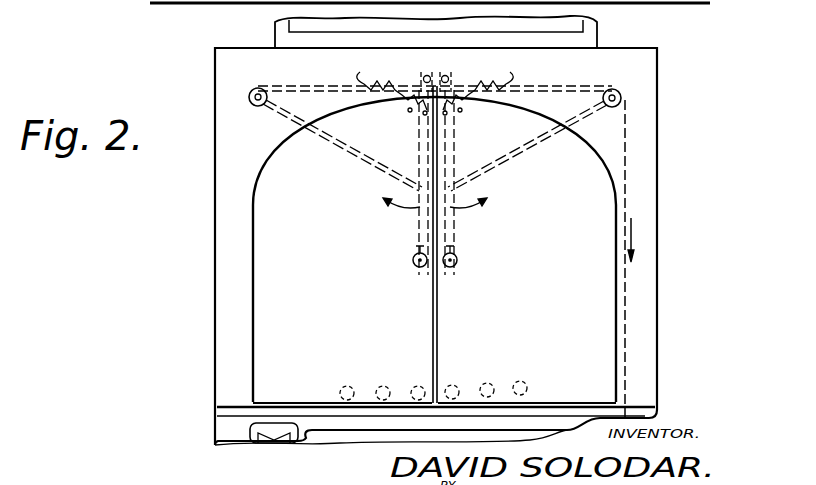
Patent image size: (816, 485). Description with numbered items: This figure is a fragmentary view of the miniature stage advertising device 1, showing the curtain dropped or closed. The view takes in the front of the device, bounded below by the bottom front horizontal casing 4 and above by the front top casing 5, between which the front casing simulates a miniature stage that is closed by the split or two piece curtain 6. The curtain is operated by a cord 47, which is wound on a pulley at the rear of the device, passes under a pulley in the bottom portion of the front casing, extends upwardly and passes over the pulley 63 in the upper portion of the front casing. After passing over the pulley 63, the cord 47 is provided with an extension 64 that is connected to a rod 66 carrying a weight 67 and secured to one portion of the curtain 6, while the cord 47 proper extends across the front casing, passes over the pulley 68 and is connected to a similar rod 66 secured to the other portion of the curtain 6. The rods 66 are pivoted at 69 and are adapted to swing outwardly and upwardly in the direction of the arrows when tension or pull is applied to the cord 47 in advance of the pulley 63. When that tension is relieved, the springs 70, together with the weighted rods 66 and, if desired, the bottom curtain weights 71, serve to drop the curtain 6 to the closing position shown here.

The miniature stage advertising device 1 is at (215, 243).
The bottom front horizontal casing 4 is at (241, 437).
The front top casing 5 is at (597, 23).
The split or two piece curtain 6 is at (434, 250).
The cord 47 is at (325, 86).
The pulley 63 is at (622, 98).
The extension 64 is at (523, 147).
The rod 66 is at (418, 224).
The weight 67 is at (413, 259).
The pulley 68 is at (249, 94).
The pivot 69 is at (460, 69).
The springs 70 is at (408, 106).
The bottom curtain weights 71 is at (413, 388).